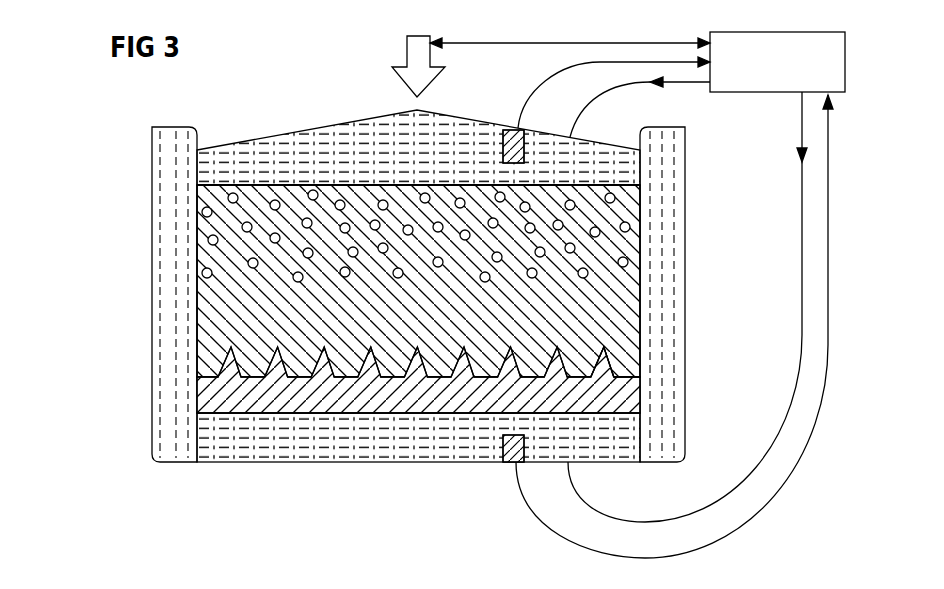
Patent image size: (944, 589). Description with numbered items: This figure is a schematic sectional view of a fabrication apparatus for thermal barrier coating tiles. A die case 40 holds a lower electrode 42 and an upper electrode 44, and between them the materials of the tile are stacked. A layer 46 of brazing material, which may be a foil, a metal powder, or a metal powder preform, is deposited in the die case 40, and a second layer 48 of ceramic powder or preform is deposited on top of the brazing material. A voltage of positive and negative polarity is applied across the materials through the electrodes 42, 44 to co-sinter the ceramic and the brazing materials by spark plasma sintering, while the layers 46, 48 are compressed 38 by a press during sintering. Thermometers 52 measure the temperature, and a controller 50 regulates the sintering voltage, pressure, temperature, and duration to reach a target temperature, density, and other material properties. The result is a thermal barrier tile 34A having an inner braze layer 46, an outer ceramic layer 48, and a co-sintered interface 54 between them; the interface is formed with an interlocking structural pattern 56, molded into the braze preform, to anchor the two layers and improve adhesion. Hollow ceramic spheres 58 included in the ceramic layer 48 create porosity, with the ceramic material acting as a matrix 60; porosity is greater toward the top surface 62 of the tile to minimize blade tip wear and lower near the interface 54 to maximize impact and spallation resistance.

The thermal barrier tile 34A is at (609, 313).
The compression 38 is at (412, 50).
The die case 40 is at (152, 265).
The electrode 42 is at (337, 453).
The electrode 44 is at (292, 138).
The layer of brazing material 46 is at (212, 393).
The ceramic layer 48 is at (227, 312).
The controller 50 is at (637, 295).
The thermometer 52 is at (512, 145).
The co-sintered interface 54 is at (622, 378).
The interlocking structural pattern 56 is at (612, 365).
The hollow ceramic spheres 58 is at (628, 229).
The matrix 60 is at (625, 205).
The top surface 62 is at (258, 185).